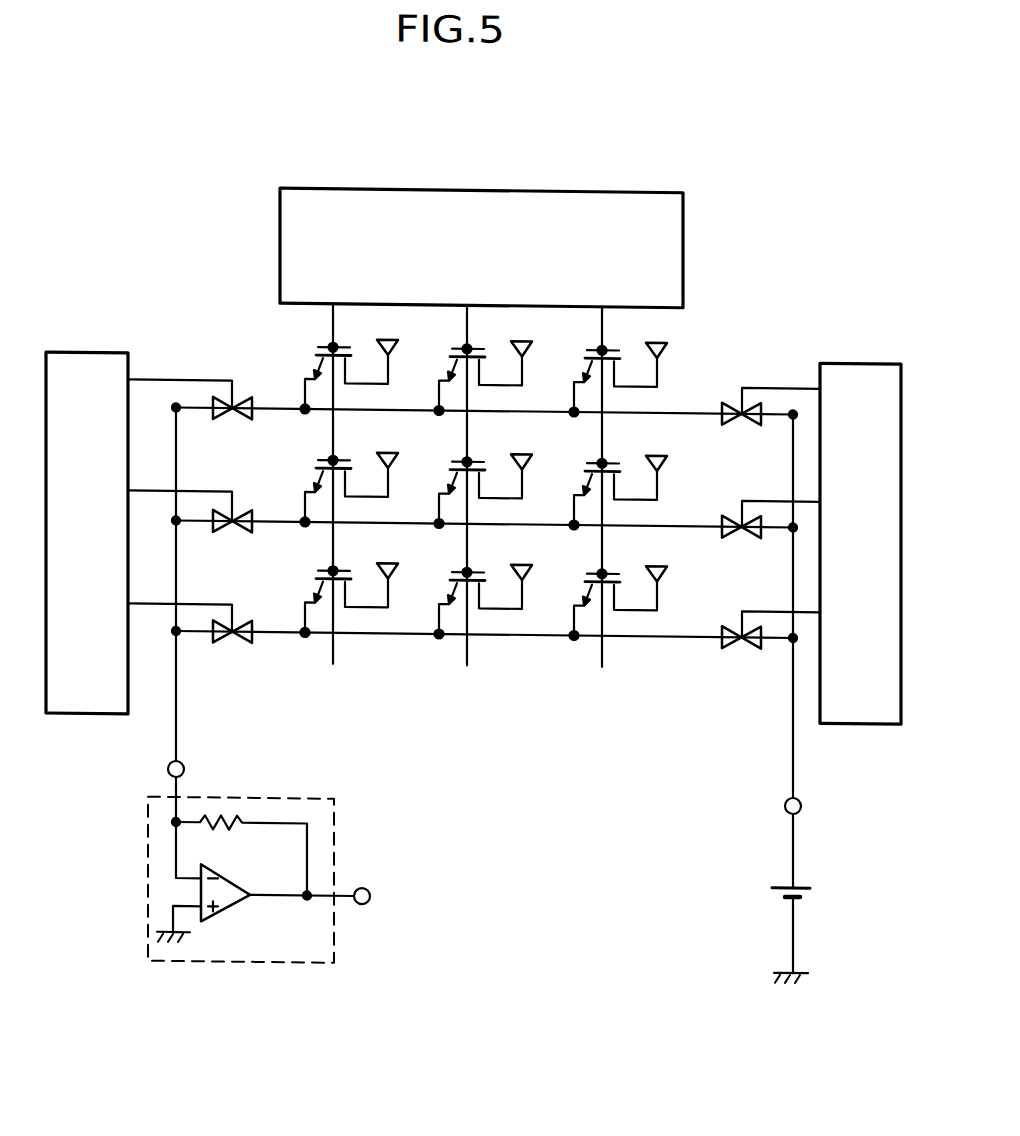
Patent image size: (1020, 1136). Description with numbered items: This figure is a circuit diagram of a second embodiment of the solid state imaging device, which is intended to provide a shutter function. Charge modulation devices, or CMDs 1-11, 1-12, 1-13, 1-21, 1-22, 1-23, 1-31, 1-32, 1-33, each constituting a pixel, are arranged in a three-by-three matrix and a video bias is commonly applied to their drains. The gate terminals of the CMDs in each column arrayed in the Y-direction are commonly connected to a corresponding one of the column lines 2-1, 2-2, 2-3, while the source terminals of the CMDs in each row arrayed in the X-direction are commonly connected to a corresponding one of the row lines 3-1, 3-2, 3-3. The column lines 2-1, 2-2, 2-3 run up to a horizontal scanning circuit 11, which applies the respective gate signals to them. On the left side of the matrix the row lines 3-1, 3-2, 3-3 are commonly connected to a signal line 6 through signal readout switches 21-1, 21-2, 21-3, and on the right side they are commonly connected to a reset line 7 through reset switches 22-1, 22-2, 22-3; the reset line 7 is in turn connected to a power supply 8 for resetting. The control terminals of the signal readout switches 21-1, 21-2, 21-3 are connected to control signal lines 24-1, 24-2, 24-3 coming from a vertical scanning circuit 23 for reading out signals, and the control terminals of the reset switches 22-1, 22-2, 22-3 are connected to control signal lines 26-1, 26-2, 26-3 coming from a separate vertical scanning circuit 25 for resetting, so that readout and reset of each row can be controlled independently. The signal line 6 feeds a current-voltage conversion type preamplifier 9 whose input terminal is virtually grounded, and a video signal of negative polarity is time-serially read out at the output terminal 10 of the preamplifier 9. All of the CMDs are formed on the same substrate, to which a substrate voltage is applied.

The horizontal scanning circuit 11 is at (657, 181).
The vertical scanning circuit for reading out signals 23 is at (78, 713).
The vertical scanning circuit for resetting 25 is at (855, 714).
The column line 2-1 is at (336, 318).
The column line 2-2 is at (470, 317).
The column line 2-3 is at (605, 315).
The row line 3-1 is at (630, 409).
The row line 3-2 is at (630, 522).
The row line 3-3 is at (627, 634).
The CMD 1-11 is at (302, 374).
The CMD 1-12 is at (439, 373).
The CMD 1-13 is at (574, 371).
The CMD 1-21 is at (302, 477).
The CMD 1-22 is at (439, 476).
The CMD 1-23 is at (574, 474).
The CMD 1-31 is at (304, 588).
The CMD 1-32 is at (439, 587).
The CMD 1-33 is at (574, 585).
The signal readout switch 21-1 is at (233, 418).
The signal readout switch 21-2 is at (231, 530).
The signal readout switch 21-3 is at (232, 640).
The reset switch 22-1 is at (741, 418).
The reset switch 22-2 is at (741, 530).
The reset switch 22-3 is at (741, 641).
The control signal line 24-1 is at (205, 374).
The control signal line 24-2 is at (205, 488).
The control signal line 24-3 is at (212, 600).
The control signal line 26-1 is at (761, 378).
The control signal line 26-2 is at (748, 492).
The control signal line 26-3 is at (743, 603).
The signal line 6 is at (178, 725).
The reset line 7 is at (791, 755).
The power supply for resetting 8 is at (812, 884).
The current-voltage conversion type preamplifier 9 is at (252, 960).
The output terminal 10 is at (365, 874).